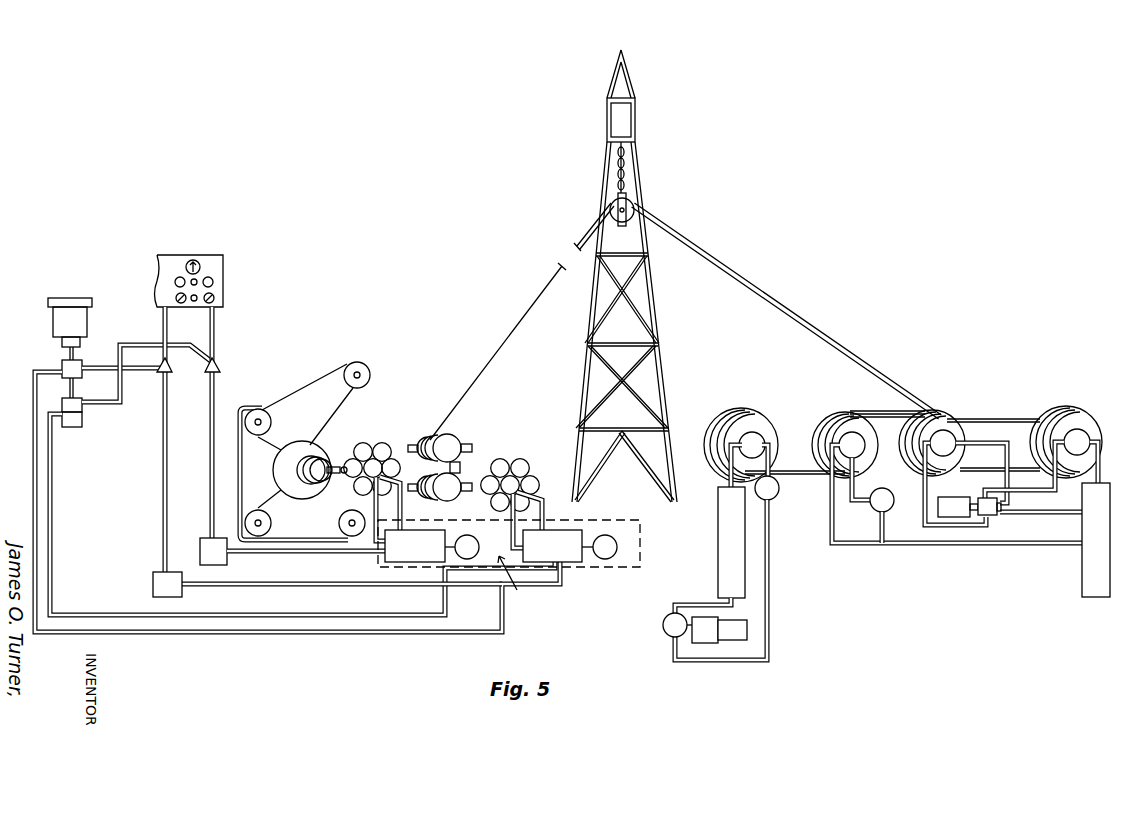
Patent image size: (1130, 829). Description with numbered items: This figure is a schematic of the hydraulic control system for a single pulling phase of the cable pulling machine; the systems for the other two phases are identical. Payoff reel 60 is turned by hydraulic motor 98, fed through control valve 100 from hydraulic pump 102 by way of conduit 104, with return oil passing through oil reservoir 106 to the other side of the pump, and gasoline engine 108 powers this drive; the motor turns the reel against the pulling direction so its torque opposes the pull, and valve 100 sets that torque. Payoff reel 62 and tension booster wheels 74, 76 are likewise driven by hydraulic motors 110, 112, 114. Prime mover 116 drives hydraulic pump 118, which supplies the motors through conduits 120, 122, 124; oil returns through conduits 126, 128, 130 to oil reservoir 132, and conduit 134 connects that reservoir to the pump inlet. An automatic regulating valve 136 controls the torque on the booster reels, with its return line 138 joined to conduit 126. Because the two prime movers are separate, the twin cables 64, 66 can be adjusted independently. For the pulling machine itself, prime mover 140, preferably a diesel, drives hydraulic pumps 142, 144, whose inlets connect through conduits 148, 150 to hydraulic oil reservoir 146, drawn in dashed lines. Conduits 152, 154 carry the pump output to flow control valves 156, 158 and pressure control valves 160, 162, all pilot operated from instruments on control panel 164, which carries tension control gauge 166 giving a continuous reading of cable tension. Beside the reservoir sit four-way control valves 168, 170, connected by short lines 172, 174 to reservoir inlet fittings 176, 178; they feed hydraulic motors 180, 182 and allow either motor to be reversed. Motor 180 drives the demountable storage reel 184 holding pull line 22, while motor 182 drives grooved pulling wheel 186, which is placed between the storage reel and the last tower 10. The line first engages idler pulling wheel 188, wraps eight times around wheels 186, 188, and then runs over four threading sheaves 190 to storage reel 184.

The last tower 10 is at (605, 115).
The pull line 22 is at (535, 304).
The payoff reel 60 is at (741, 412).
The payoff reel 62 is at (1067, 416).
The cable 64 is at (778, 311).
The cable 66 is at (828, 336).
The tension booster wheel 74 is at (850, 420).
The tension booster wheel 76 is at (920, 418).
The hydraulic motor 98 is at (757, 436).
The control valve 100 is at (772, 501).
The hydraulic pump 102 is at (662, 625).
The conduit 104 is at (772, 598).
The oil reservoir 106 is at (716, 558).
The gasoline engine 108 is at (707, 638).
The hydraulic motor 110 is at (1078, 436).
The hydraulic motor 112 is at (948, 431).
The hydraulic motor 114 is at (858, 458).
The prime mover 116 is at (958, 498).
The hydraulic pump 118 is at (977, 497).
The conduit 120 is at (848, 486).
The conduit 122 is at (922, 491).
The conduit 124 is at (1049, 489).
The return conduit 126 is at (960, 544).
The return conduit 128 is at (1046, 457).
The return conduit 130 is at (1068, 493).
The oil reservoir 132 is at (1085, 560).
The conduit 134 is at (1013, 519).
The automatic regulating valve 136 is at (888, 513).
The return line 138 is at (881, 536).
The prime mover 140 is at (62, 312).
The hydraulic pump 142 is at (60, 368).
The hydraulic pump 144 is at (73, 429).
The hydraulic oil reservoir 146 is at (641, 551).
The conduit 148 is at (300, 613).
The conduit 150 is at (302, 635).
The conduit 152 is at (97, 367).
The conduit 154 is at (124, 390).
The flow control valve 156 is at (168, 372).
The flow control valve 158 is at (220, 367).
The pressure control valve 160 is at (153, 576).
The pressure control valve 162 is at (203, 537).
The control panel 164 is at (220, 283).
The tension control gauge 166 is at (197, 262).
The four-way control valve 168 is at (306, 566).
The four-way control valve 170 is at (561, 530).
The short line 172 is at (447, 538).
The short line 174 is at (590, 534).
The reservoir inlet fitting 176 is at (478, 546).
The reservoir inlet fitting 178 is at (617, 542).
The hydraulic motor 180 is at (366, 447).
The hydraulic motor 182 is at (522, 465).
The storage reel 184 is at (308, 447).
The grooved pulling wheel 186 is at (460, 473).
The idler pulling wheel 188 is at (452, 437).
The threading sheaves 190 is at (258, 421).